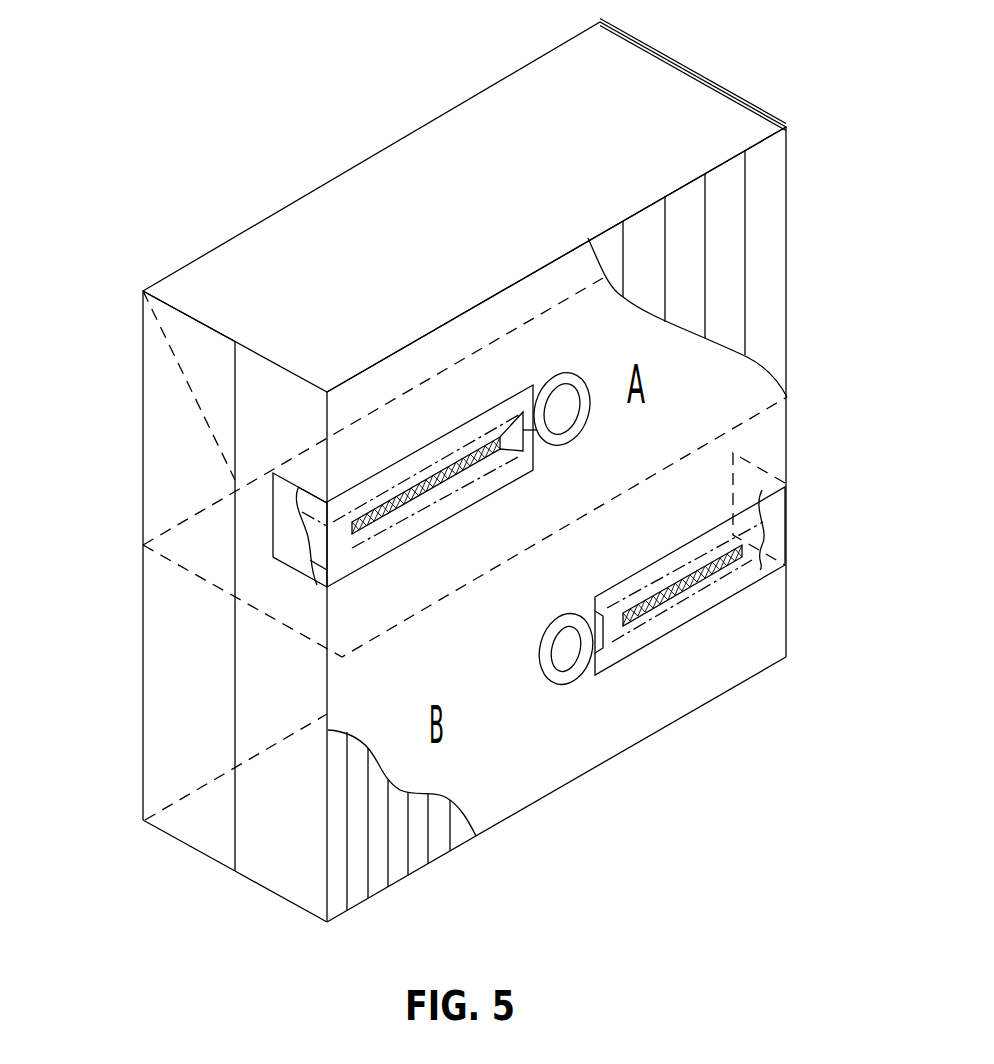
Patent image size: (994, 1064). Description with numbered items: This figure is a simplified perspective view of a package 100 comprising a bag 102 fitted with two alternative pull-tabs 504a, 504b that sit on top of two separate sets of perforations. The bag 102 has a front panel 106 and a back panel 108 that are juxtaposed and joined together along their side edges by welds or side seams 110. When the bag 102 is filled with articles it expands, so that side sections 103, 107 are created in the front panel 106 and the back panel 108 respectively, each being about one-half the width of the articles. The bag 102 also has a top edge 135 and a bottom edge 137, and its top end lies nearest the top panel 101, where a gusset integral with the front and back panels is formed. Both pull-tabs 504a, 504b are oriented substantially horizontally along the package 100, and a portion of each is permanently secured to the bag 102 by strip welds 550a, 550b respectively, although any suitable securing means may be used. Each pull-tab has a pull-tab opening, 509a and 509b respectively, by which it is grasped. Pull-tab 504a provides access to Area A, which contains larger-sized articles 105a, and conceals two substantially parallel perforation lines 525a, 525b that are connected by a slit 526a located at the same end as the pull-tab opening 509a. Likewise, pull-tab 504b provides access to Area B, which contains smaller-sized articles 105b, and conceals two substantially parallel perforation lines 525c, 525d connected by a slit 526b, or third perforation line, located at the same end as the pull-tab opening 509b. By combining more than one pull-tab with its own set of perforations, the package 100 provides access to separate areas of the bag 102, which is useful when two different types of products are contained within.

The package 100 is at (318, 76).
The top panel 101 is at (370, 157).
The top edge 135 is at (216, 331).
The larger-sized articles 105a is at (772, 203).
The bag 102 is at (788, 438).
The side seams 110 is at (235, 604).
The back panel 108 is at (143, 700).
The side section 107 is at (185, 842).
The side section 103 is at (278, 894).
The smaller-sized articles 105b is at (418, 860).
The bottom edge 137 is at (560, 787).
The front panel 106 is at (675, 707).
The pull-tab 504a is at (512, 396).
The perforation line 525a is at (427, 468).
The perforation line 525b is at (425, 508).
The strip weld 550a is at (473, 464).
The pull-tab opening 509a is at (570, 393).
The slit 526a is at (552, 432).
The pull-tab 504b is at (617, 583).
The perforation line 525c is at (688, 562).
The perforation line 525d is at (678, 605).
The strip weld 550b is at (713, 572).
The pull-tab opening 509b is at (560, 652).
The slit 526b is at (573, 668).